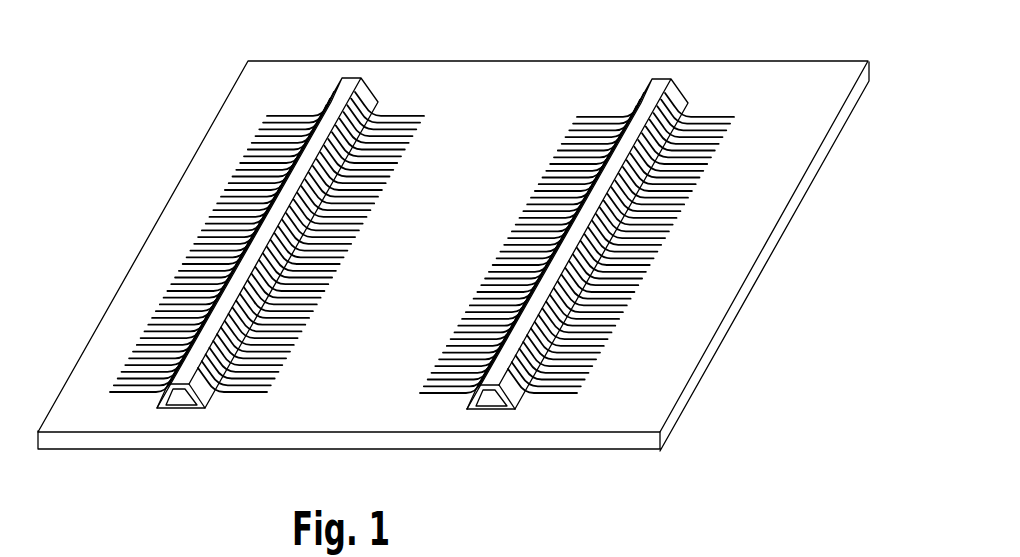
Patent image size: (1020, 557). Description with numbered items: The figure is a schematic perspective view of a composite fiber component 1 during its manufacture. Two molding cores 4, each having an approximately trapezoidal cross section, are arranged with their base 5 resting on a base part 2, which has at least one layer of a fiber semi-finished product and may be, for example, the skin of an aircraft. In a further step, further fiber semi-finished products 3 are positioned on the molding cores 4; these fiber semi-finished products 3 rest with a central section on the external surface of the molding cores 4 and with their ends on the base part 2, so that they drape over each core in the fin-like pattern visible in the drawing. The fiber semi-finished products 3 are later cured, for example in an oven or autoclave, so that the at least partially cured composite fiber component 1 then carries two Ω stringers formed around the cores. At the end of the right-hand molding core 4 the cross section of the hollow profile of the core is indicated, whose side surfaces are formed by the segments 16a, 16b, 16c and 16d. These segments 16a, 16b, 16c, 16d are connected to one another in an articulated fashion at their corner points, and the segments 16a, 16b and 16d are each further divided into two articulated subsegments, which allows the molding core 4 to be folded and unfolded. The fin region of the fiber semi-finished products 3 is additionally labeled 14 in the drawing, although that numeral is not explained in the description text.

The composite fiber component 1 is at (126, 89).
The base part 2 is at (660, 360).
The fiber semi-finished products 3 is at (451, 259).
The molding core 4 is at (422, 259).
The base 5 is at (177, 411).
The cooling fins 14 is at (236, 112).
The segment 16a is at (491, 412).
The segment 16b is at (513, 399).
The segment 16c is at (472, 363).
The segment 16d is at (467, 398).